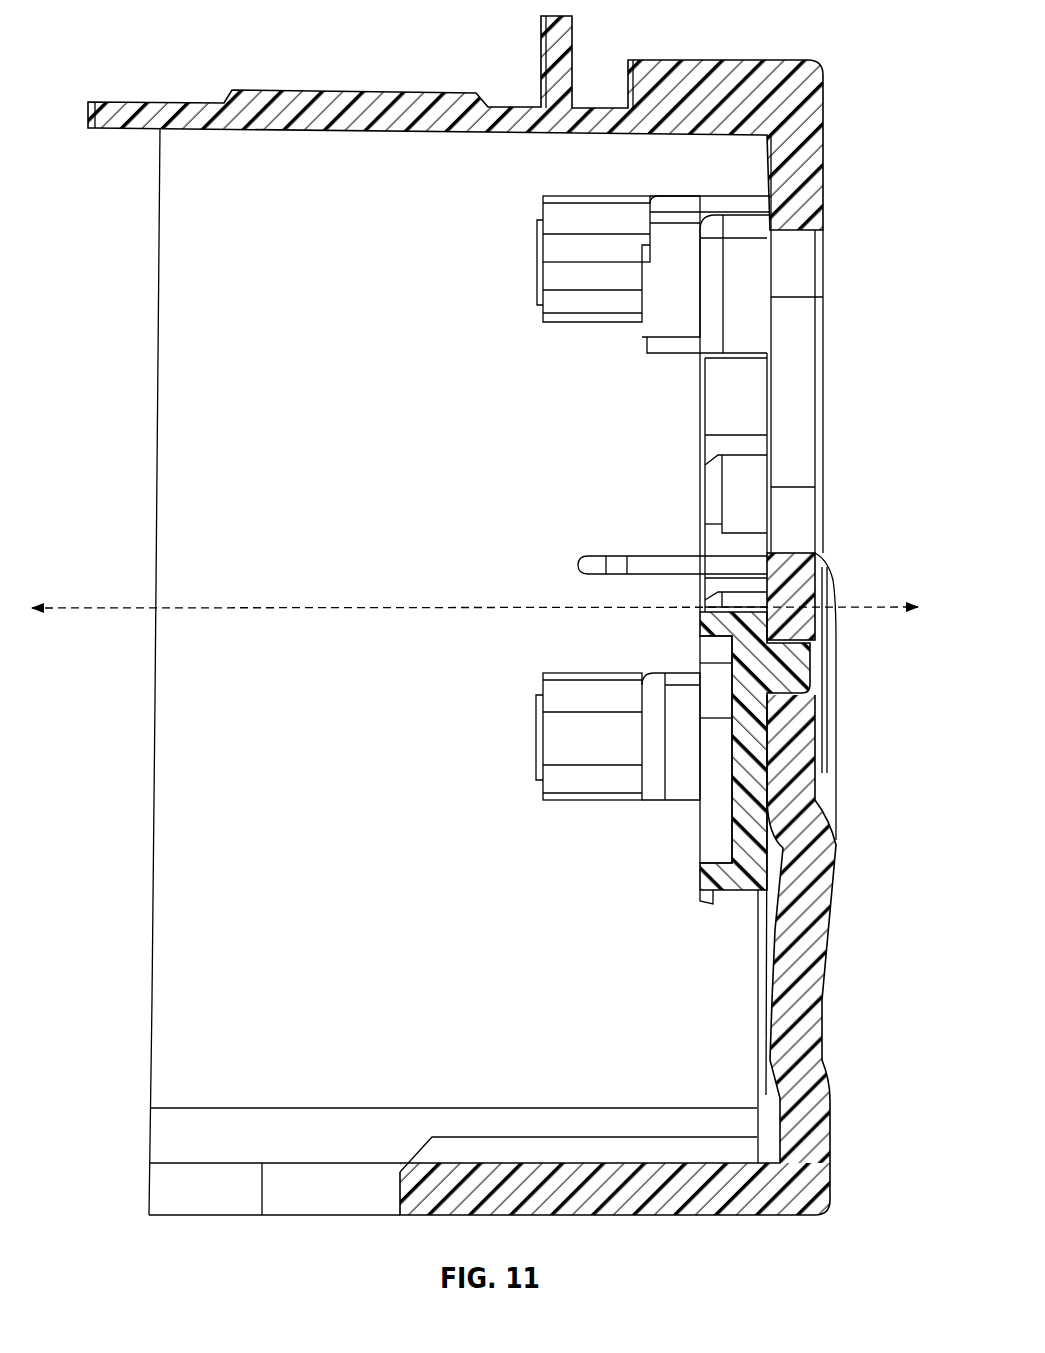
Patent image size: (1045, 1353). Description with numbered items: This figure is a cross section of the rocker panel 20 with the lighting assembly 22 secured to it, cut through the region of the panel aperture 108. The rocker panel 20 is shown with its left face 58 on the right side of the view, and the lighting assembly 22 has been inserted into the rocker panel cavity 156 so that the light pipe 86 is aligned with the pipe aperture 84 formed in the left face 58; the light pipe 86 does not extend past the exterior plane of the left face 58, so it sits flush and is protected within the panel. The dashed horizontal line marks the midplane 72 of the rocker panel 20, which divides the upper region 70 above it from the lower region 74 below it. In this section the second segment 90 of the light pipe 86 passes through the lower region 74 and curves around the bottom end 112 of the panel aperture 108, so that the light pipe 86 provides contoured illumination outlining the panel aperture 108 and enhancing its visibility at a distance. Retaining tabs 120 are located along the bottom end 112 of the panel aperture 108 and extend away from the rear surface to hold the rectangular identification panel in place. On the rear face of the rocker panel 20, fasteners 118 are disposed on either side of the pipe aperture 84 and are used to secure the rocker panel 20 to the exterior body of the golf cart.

The rocker panel 20 is at (128, 60).
The lighting assembly 22 is at (682, 455).
The left face 58 is at (825, 180).
The upper region 70 is at (130, 246).
The midplane 72 is at (90, 612).
The lower region 74 is at (149, 819).
The pipe aperture 84 is at (841, 730).
The light pipe 86 is at (800, 672).
The second segment 90 is at (700, 815).
The panel aperture 108 is at (856, 344).
The bottom end 112 is at (800, 553).
The fasteners 118 is at (545, 256).
The retaining tabs 120 is at (655, 553).
The rocker panel cavity 156 is at (184, 407).